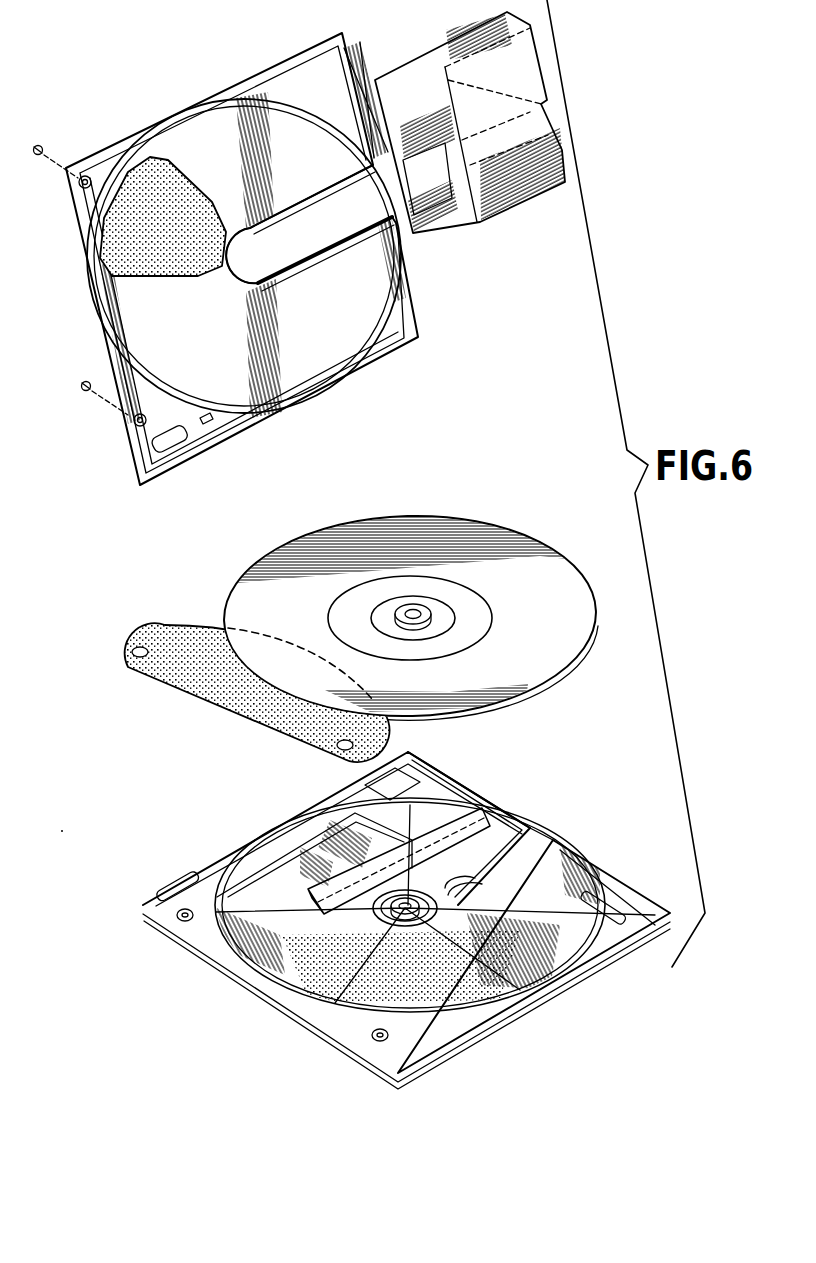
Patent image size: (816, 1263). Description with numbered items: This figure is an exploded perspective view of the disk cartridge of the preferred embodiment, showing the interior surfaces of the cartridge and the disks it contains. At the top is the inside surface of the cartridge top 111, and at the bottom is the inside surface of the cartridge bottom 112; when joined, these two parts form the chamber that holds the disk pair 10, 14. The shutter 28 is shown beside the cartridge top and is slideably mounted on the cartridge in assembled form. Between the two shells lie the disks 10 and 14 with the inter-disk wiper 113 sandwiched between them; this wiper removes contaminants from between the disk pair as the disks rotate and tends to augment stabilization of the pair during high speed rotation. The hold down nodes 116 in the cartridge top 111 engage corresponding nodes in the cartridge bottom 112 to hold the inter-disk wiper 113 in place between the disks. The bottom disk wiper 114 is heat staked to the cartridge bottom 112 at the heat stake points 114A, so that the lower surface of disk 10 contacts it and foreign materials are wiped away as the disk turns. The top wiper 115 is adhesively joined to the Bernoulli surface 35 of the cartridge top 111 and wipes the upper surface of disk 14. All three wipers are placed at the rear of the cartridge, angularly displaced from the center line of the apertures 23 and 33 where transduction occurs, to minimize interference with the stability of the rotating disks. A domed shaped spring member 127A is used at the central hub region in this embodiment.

The disk 10 is at (496, 706).
The disk 14 is at (508, 570).
The aperture 23 is at (492, 864).
The shutter 28 is at (422, 67).
The aperture 33 is at (318, 220).
The Bernoulli surface 35 is at (210, 120).
The cartridge top 111 is at (94, 310).
The cartridge bottom 112 is at (258, 984).
The inter-disk wiper 113 is at (192, 686).
The bottom disk wiper 114 is at (428, 1008).
The heat stake points 114A is at (512, 926).
The top wiper 115 is at (196, 206).
The hold down nodes 116 is at (78, 185).
The domed shaped spring member 127A is at (378, 914).